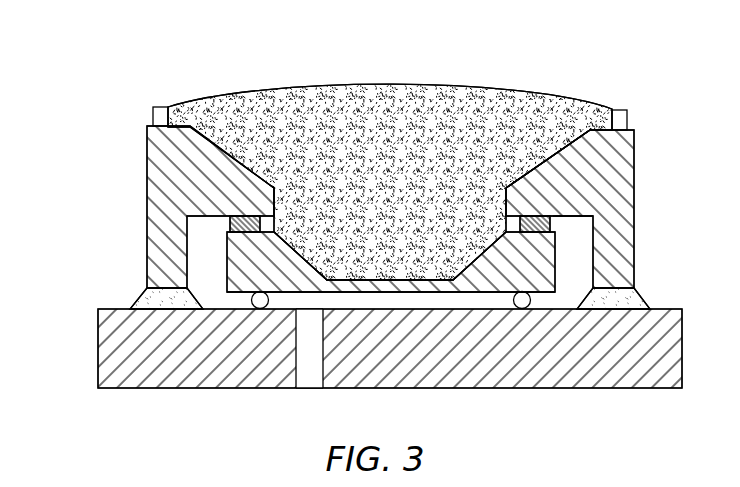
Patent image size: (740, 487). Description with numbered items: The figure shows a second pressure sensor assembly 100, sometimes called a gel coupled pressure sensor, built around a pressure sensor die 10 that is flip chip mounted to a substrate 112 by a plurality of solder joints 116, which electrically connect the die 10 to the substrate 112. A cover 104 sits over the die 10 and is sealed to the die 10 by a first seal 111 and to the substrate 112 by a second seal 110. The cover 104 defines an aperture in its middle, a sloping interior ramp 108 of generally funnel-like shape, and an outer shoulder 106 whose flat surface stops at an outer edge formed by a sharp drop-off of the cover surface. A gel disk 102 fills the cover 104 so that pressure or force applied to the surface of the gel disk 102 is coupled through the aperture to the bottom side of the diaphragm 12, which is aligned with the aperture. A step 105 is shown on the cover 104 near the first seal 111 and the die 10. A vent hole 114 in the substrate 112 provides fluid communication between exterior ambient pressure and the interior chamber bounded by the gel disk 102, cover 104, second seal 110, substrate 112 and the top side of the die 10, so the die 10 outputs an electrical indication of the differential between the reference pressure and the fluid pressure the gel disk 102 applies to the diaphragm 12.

The second pressure sensor assembly 100 is at (582, 45).
The gel disk 102 is at (320, 85).
The cover 104 is at (147, 150).
The ledge step 105 is at (580, 220).
The outer shoulder 106 is at (628, 110).
The sloping interior ramp 108 is at (547, 152).
The second seal 110 is at (647, 301).
The first seal 111 is at (230, 222).
The substrate 112 is at (98, 343).
The vent hole 114 is at (311, 389).
The solder joints 116 is at (530, 311).
The pressure sensor die 10 is at (227, 253).
The diaphragm 12 is at (407, 293).